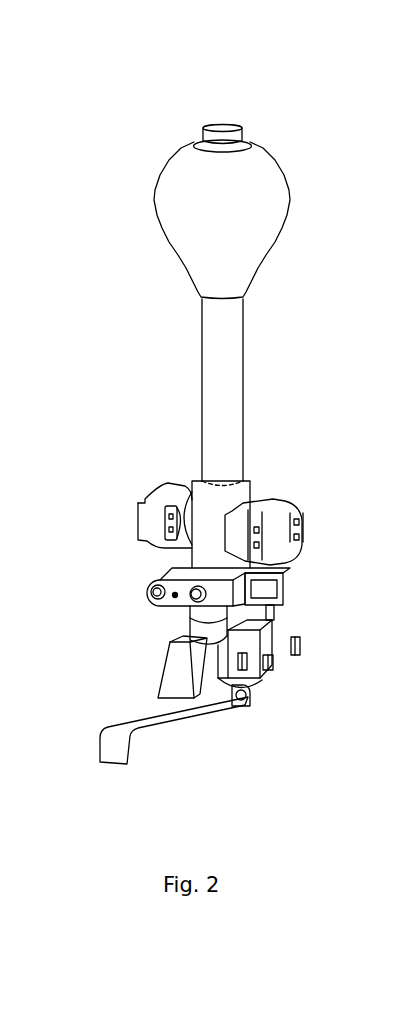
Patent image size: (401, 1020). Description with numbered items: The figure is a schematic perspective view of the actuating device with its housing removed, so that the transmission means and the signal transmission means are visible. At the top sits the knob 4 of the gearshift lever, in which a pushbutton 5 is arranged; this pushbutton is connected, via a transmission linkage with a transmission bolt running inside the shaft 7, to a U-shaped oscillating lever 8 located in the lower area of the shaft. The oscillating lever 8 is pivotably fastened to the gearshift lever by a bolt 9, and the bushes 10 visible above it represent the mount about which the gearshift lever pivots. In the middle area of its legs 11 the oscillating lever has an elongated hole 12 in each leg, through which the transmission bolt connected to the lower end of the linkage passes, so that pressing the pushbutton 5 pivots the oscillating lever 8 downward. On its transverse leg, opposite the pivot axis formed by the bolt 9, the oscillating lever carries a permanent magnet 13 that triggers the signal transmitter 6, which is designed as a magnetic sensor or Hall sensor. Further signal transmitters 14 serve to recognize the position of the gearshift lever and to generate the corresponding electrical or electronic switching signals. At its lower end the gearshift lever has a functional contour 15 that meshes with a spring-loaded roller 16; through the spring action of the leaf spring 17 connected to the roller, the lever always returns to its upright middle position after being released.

The knob 4 is at (192, 234).
The pushbutton 5 is at (223, 133).
The signal transmitter 6 is at (274, 612).
The shaft 7 is at (220, 419).
The oscillating lever 8 is at (301, 573).
The bolt 9 is at (152, 588).
The bushes 10 is at (149, 521).
The legs 11 is at (173, 597).
The elongated hole 12 is at (188, 605).
The permanent magnet 13 is at (272, 587).
The signal transmitters 14 is at (243, 662).
The functional contour 15 is at (200, 690).
The spring-loaded roller 16 is at (254, 712).
The leaf spring 17 is at (161, 733).